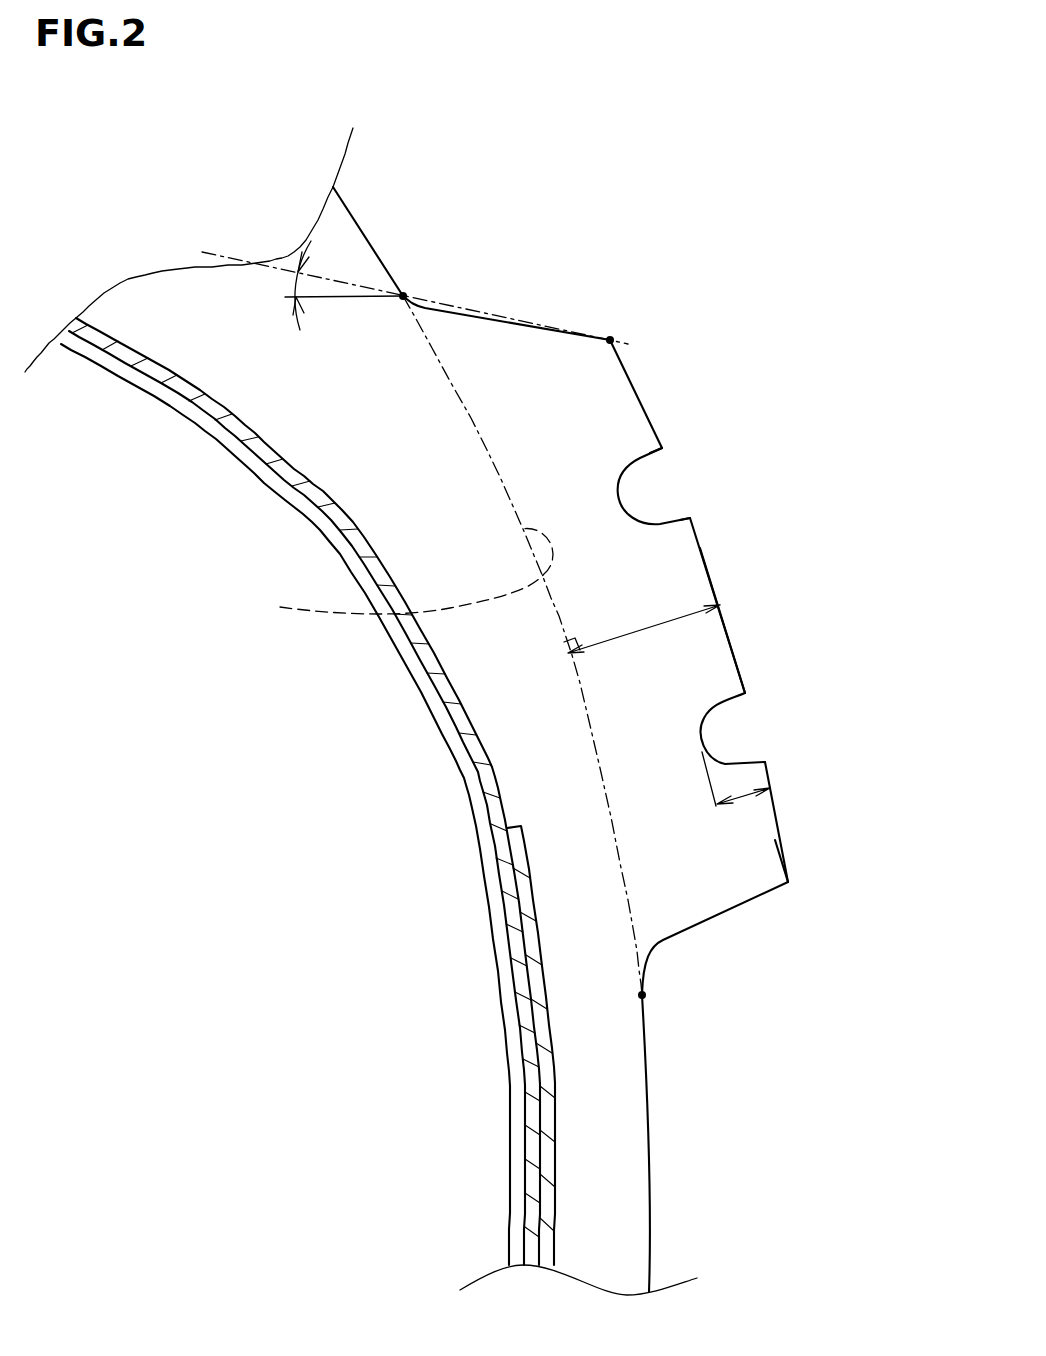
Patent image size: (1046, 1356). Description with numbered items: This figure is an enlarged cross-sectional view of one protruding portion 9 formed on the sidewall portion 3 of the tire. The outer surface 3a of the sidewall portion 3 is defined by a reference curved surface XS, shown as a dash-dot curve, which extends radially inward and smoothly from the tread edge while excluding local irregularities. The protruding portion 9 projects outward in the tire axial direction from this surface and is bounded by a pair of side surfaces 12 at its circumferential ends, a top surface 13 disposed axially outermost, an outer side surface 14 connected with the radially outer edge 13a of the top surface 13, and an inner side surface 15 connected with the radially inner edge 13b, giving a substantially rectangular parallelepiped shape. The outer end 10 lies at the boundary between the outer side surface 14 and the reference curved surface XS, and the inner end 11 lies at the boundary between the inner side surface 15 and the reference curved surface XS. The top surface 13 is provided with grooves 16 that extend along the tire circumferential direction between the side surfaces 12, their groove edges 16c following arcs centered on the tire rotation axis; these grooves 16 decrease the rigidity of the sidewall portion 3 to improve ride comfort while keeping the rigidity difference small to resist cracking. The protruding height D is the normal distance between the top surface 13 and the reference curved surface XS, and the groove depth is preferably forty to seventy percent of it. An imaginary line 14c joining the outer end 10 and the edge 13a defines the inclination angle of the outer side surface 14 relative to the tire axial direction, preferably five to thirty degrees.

The sidewall portion 3 is at (659, 243).
The outer surface of the sidewall portion 3a is at (349, 184).
The protruding portion 9 is at (706, 344).
The outer end 10 is at (403, 296).
The inner end 11 is at (642, 995).
The side surface 12 is at (679, 553).
The top surface 13 is at (733, 628).
The edge of the top surface on the outer side in the tire radial direction 13a is at (610, 340).
The edge of the top surface on the inner side in the tire radial direction 13b is at (788, 882).
The outer side surface 14 is at (485, 320).
The imaginary line 14c is at (223, 256).
The inner side surface 15 is at (718, 915).
The groove 16 is at (664, 486).
The groove edge 16c is at (662, 448).
The protruding height D is at (645, 630).
The reference curved surface XS is at (435, 645).